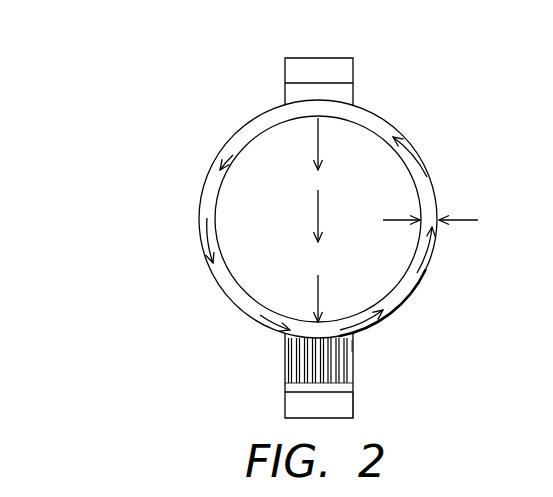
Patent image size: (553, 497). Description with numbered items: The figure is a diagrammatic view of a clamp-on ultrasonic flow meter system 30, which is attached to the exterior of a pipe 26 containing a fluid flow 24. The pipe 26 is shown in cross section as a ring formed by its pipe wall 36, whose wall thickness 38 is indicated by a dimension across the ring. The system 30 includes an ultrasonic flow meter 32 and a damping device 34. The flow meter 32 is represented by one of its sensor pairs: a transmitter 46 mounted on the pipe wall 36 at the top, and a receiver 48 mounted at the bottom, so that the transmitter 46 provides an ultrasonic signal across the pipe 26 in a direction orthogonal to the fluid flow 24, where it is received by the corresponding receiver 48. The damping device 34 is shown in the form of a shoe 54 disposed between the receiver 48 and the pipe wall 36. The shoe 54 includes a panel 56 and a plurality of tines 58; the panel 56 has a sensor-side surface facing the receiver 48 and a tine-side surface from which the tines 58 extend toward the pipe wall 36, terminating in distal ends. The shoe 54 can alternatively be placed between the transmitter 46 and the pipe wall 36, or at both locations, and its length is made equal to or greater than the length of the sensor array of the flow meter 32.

The transmitter 46 is at (285, 76).
The pipe wall 36 is at (268, 120).
The wall thickness 38 is at (462, 220).
The fluid flow 24 is at (385, 275).
The pipe 26 is at (213, 290).
The damping device 34 is at (228, 347).
The panel 56 is at (285, 388).
The receiver 48 is at (285, 410).
The tines 58 is at (353, 345).
The ultrasonic flow meter system 30 is at (468, 346).
The shoe 54 is at (355, 379).
The ultrasonic flow meter 32 is at (372, 397).